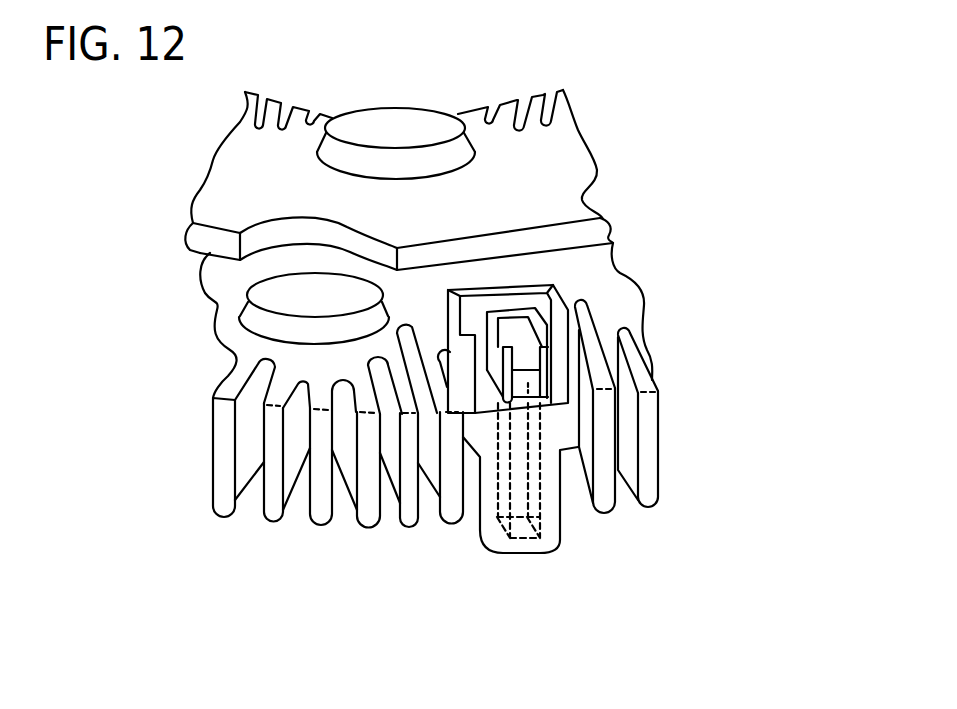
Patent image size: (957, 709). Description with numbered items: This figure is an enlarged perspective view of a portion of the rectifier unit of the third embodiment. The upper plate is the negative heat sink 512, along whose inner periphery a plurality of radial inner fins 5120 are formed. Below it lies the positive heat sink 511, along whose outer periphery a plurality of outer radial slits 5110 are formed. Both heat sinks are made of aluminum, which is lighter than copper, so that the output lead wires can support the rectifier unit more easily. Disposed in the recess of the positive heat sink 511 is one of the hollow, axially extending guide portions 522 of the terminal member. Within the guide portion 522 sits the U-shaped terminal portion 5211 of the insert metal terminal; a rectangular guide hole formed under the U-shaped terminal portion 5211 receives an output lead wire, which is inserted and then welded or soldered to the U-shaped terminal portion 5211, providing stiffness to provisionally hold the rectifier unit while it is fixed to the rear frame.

The negative heat sink 512 is at (552, 158).
The radial inner fins 5120 is at (288, 117).
The positive heat sink 511 is at (593, 296).
The outer radial slits 5110 is at (250, 502).
The guide portion 522 is at (545, 440).
The U-shaped terminal portion 5211 is at (547, 368).